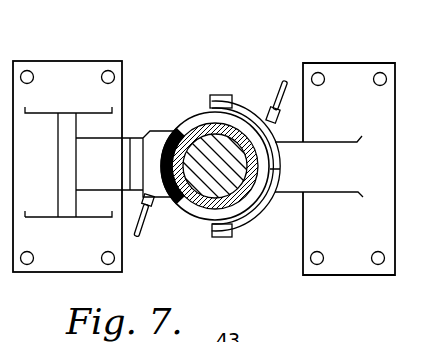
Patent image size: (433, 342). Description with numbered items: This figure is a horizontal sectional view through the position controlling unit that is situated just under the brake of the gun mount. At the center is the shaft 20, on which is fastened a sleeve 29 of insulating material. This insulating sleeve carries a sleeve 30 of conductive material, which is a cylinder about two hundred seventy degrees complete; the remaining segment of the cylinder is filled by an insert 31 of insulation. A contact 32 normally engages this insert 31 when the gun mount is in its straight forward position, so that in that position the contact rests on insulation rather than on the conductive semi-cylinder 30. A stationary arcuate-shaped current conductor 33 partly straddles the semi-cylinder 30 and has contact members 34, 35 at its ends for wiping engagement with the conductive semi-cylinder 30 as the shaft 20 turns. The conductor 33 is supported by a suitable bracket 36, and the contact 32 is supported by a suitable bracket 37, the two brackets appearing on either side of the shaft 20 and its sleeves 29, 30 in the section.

The bracket 37 is at (63, 74).
The bracket 36 is at (343, 73).
The contact 32 is at (145, 148).
The shaft 20 is at (203, 140).
The sleeve of insulating material 29 is at (231, 127).
The sleeve of conductive material 30 is at (197, 212).
The insert of insulation 31 is at (168, 124).
The stationary arcuate-shaped current conductor 33 is at (245, 223).
The contact member 35 is at (218, 103).
The contact member 34 is at (220, 238).